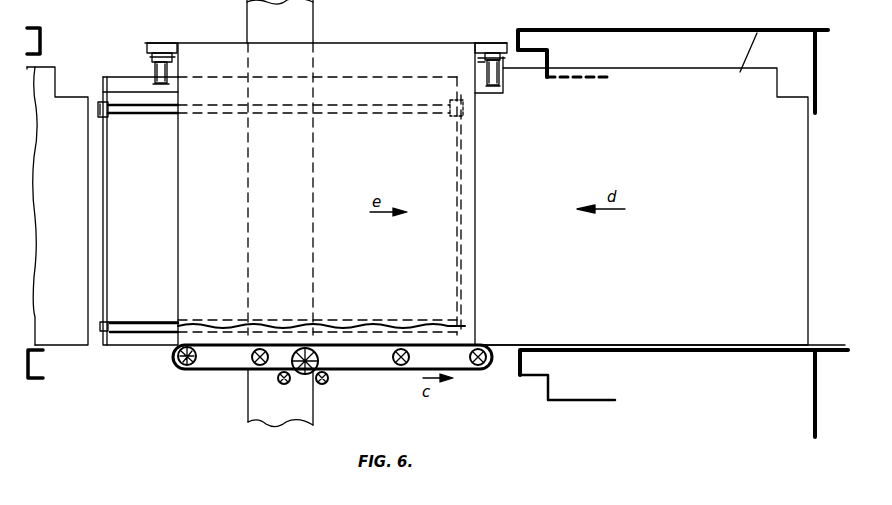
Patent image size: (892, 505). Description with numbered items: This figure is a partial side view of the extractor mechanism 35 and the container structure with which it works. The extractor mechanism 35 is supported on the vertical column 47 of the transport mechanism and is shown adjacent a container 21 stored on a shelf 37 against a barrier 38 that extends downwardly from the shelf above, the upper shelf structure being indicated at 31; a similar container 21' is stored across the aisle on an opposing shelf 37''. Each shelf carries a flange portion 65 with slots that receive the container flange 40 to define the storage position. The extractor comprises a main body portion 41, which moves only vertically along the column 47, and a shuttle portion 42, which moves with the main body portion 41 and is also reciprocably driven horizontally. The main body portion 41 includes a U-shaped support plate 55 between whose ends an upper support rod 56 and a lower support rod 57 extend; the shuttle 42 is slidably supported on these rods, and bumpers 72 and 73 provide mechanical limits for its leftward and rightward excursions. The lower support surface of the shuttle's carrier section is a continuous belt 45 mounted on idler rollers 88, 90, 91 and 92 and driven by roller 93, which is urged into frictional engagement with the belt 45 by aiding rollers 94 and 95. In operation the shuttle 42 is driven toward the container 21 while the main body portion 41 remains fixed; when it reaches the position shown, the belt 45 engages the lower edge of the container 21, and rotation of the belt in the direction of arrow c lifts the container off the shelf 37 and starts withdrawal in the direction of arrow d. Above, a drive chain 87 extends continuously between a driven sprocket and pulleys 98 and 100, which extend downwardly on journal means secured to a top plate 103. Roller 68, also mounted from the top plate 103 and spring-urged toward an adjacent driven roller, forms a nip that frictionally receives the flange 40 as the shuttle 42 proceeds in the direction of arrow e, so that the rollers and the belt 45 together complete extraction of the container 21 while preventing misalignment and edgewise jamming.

The container 21 is at (644, 206).
The similar container 21' is at (57, 206).
The top wall 31 is at (713, 27).
The extractor mechanism 35 is at (431, 38).
The shelf 37 is at (664, 391).
The opposing shelf 37'' is at (55, 378).
The barrier 38 is at (819, 62).
The container flange 40 is at (763, 36).
The main body portion 41 is at (160, 292).
The shuttle portion 42 is at (355, 47).
The continuous belt 45 is at (380, 350).
The vertical column 47 is at (247, 23).
The U-shaped support plate 55 is at (150, 216).
The upper support rod 56 is at (157, 114).
The lower support rod 57 is at (147, 334).
The flange portion 65 is at (600, 407).
The roller 68 is at (503, 77).
The bumper 72 is at (108, 112).
The bumper 73 is at (442, 127).
The drive chain 87 is at (180, 58).
The idler roller 88 is at (200, 369).
The idler roller 90 is at (248, 364).
The idler roller 91 is at (405, 344).
The idler roller 92 is at (486, 346).
The drive roller 93 is at (304, 376).
The aiding roller 94 is at (277, 382).
The aiding roller 95 is at (332, 384).
The driven pulley 98 is at (151, 60).
The driven pulley 100 is at (497, 60).
The top plate 103 is at (157, 43).